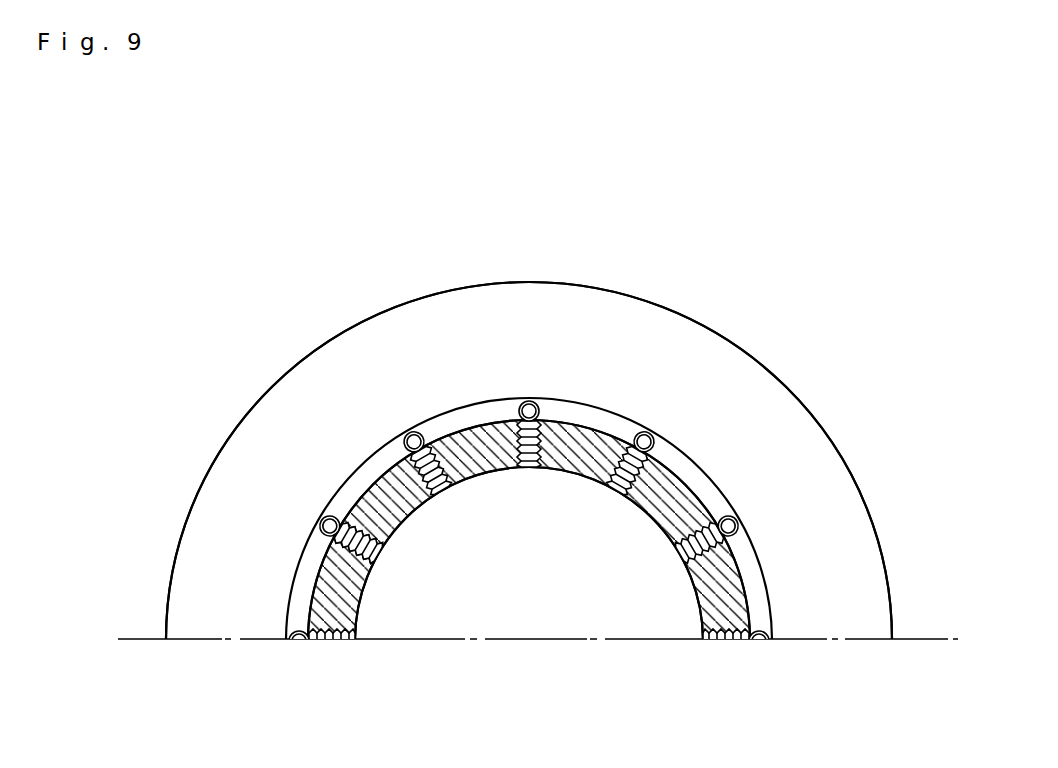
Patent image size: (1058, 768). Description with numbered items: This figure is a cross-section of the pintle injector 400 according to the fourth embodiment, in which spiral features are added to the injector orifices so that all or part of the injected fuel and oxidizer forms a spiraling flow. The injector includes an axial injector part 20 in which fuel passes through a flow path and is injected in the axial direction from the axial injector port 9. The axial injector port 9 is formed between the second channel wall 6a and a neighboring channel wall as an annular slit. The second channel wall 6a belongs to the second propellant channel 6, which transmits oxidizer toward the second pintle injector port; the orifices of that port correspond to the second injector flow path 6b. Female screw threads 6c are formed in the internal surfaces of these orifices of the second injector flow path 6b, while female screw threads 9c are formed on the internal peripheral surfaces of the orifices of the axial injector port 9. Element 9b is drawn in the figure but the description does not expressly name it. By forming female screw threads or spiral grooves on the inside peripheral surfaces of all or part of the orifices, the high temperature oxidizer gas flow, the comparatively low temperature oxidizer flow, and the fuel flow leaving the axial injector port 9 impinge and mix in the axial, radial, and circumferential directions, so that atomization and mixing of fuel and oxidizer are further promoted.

The pintle injector 400 is at (493, 236).
The axial injector part 20 is at (711, 387).
The axial injector port 9 is at (532, 403).
The outer ring 9b is at (483, 422).
The female screw threads 9c is at (545, 403).
The second propellant channel 6 is at (517, 598).
The second channel wall 6a is at (680, 507).
The second injector flow path 6b is at (358, 510).
The female screw threads 6c is at (380, 542).